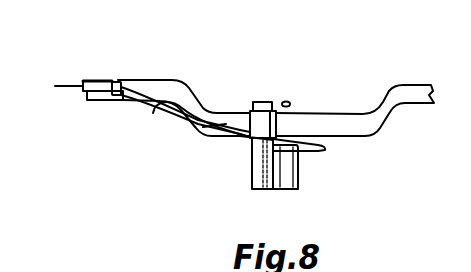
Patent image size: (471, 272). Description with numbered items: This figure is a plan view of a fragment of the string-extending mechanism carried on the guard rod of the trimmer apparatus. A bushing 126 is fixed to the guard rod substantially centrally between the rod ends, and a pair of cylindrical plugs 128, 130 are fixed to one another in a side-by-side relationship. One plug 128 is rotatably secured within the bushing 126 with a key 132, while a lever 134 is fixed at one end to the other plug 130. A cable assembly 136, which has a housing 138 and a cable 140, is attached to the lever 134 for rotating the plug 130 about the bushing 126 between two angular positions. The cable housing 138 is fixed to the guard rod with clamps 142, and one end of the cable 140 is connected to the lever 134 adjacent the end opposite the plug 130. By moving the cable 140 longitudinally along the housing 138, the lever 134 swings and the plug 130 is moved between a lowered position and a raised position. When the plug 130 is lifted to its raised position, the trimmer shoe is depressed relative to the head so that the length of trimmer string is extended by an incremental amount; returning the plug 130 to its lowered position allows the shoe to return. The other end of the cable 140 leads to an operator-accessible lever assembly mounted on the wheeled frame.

The bushing 126 is at (248, 110).
The cylindrical plug 128 is at (258, 190).
The cylindrical plug 130 is at (284, 191).
The key 132 is at (289, 103).
The lever 134 is at (307, 152).
The cable assembly 136 is at (161, 72).
The cable housing 138 is at (157, 106).
The cable 140 is at (64, 92).
The clamps 142 is at (117, 82).